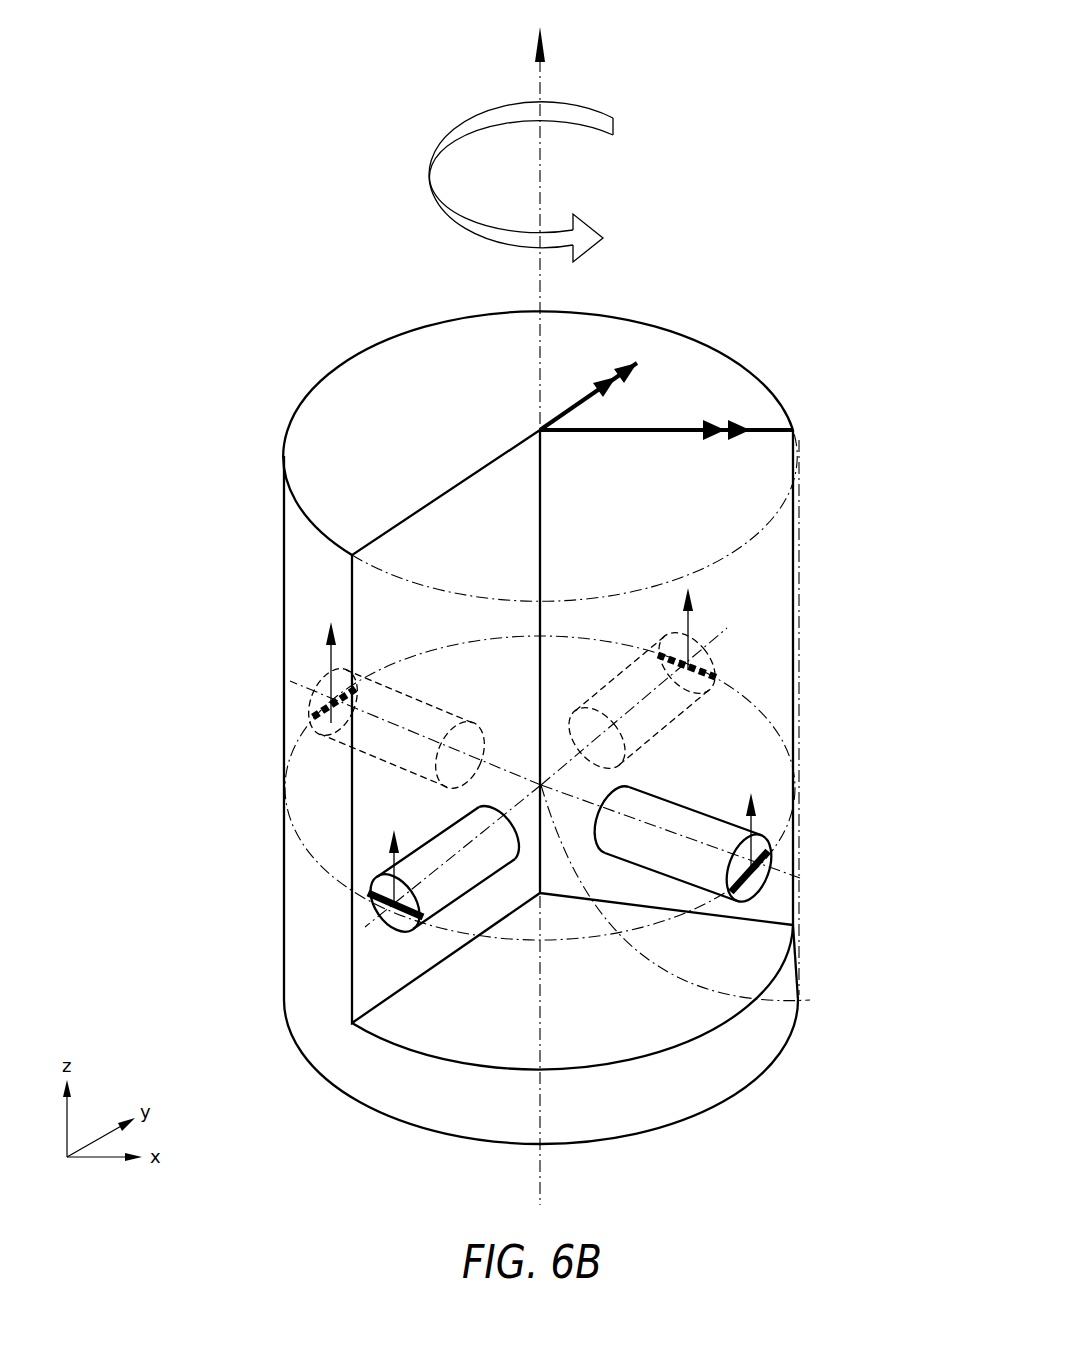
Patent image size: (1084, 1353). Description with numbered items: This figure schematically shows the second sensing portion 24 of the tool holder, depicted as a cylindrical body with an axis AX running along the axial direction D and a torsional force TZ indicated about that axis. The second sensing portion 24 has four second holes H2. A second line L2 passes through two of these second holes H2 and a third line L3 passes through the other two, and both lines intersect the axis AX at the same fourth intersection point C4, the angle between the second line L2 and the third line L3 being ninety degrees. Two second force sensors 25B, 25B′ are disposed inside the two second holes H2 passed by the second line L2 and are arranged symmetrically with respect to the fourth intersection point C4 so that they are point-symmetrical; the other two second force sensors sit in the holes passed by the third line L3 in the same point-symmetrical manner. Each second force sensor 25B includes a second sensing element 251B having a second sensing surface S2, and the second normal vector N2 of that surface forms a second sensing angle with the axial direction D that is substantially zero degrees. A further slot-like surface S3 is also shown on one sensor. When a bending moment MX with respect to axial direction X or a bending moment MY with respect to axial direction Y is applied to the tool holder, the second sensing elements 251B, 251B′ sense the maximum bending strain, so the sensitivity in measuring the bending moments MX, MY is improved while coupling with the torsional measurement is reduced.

The second sensing portion 24 is at (124, 346).
The second force sensor 25B is at (450, 905).
The second sensing element 251B is at (368, 912).
The second force sensor 25B′ is at (707, 642).
The second sensing element 251B′ is at (640, 735).
The second sensing surface S2 is at (330, 710).
The slit S3 is at (766, 856).
The second normal vector N2 is at (326, 642).
The second hole H2 is at (425, 728).
The fourth intersection point C4 is at (541, 785).
The second line L2 is at (352, 562).
The third line L3 is at (700, 978).
The axis AX is at (543, 358).
The bending moment MX is at (657, 428).
The bending moment MY is at (541, 427).
The axial direction D is at (543, 84).
The torsional force TZ is at (534, 182).